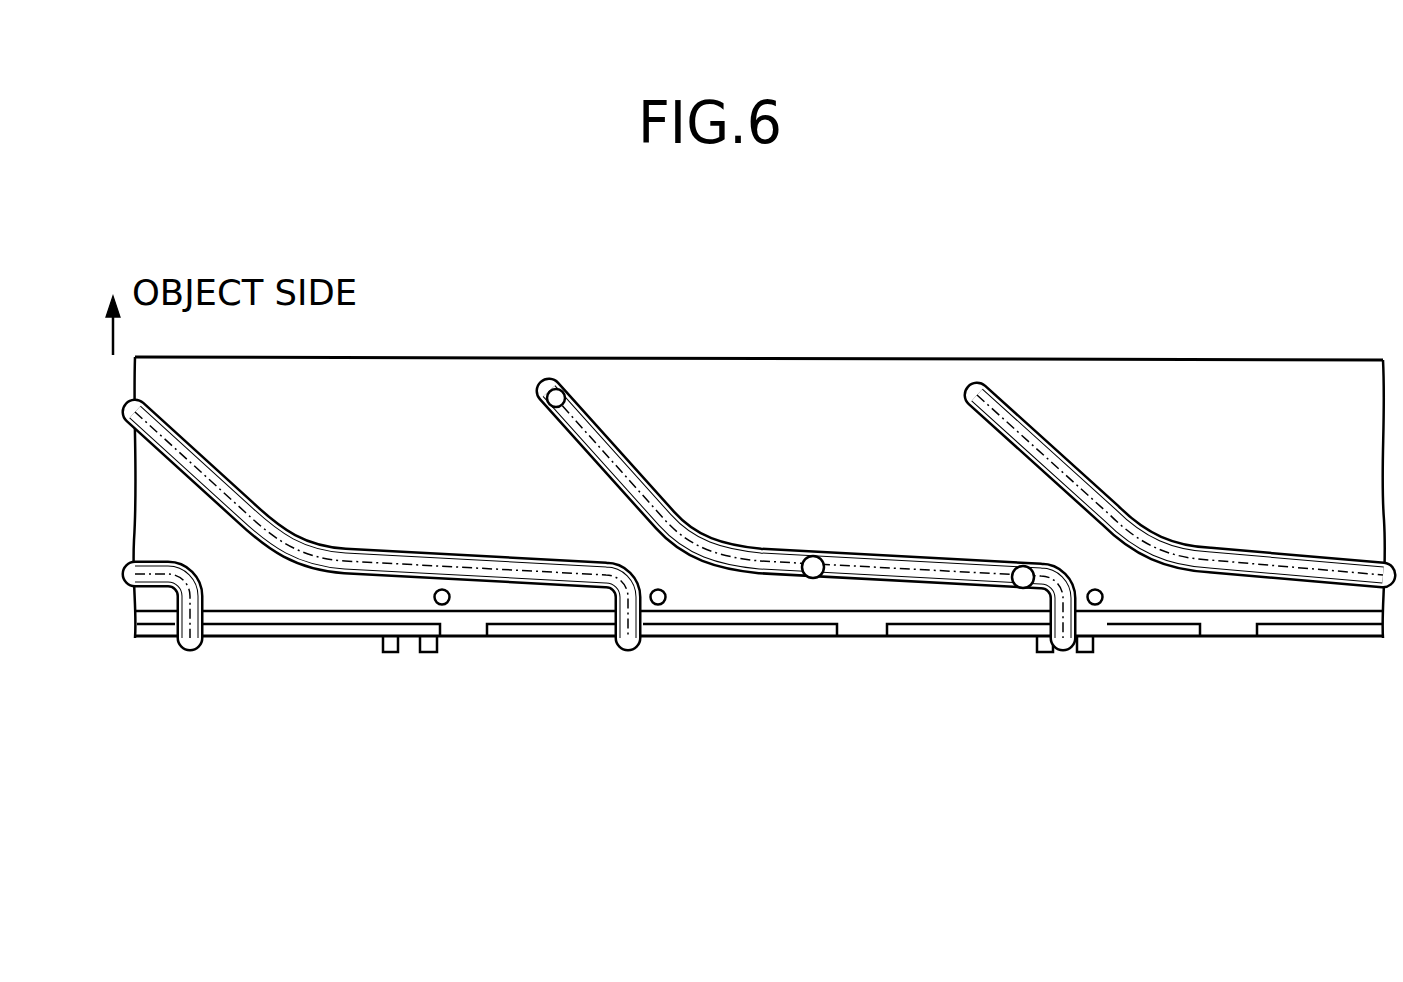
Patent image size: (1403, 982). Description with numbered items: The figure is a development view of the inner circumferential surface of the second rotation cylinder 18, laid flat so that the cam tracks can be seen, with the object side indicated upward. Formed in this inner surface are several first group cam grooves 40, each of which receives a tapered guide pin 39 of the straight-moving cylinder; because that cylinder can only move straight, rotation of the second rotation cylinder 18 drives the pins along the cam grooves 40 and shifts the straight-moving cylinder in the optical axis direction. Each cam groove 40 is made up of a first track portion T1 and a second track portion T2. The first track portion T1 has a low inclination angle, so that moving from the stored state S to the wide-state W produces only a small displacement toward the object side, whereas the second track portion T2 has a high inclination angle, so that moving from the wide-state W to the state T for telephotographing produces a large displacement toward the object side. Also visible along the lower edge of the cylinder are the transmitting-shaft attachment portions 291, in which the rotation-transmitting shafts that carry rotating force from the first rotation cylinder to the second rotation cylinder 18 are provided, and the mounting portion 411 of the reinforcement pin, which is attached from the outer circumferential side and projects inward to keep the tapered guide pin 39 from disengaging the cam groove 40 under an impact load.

The second rotation cylinder 18 is at (457, 356).
The tapered guide pin 39 is at (810, 578).
The first group cam groove 40 is at (487, 583).
The transmitting-shaft attachment portion 291 is at (432, 606).
The mounting portion of the reinforcement pin 411 is at (660, 606).
The state for telephotographing T is at (578, 397).
The first track portion T1 is at (923, 560).
The second track portion T2 is at (680, 503).
The wide-state W is at (820, 548).
The stored state S is at (1027, 552).